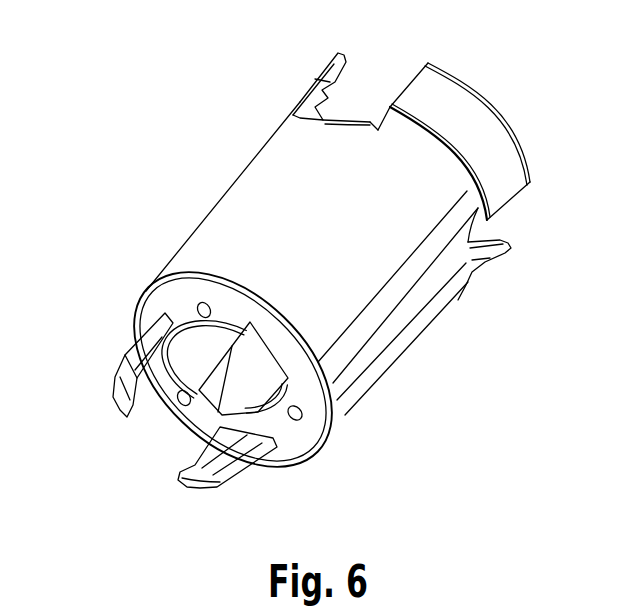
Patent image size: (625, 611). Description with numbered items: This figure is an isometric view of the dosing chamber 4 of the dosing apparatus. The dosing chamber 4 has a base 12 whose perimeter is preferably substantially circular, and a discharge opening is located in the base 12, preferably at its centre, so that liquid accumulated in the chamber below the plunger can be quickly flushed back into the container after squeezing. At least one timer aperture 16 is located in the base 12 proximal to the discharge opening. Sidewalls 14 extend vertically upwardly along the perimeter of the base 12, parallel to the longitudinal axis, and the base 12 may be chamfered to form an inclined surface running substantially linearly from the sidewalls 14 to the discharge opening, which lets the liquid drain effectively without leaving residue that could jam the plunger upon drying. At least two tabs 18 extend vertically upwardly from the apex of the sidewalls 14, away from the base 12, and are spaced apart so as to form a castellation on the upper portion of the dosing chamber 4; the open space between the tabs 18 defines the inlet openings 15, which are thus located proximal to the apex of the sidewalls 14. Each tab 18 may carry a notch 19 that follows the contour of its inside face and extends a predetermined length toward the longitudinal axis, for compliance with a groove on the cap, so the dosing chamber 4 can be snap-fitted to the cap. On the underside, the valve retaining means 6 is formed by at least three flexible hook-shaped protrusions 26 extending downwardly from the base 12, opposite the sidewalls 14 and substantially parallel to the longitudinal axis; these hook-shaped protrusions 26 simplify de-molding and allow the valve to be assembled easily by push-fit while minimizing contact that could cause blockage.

The dosing chamber 4 is at (192, 228).
The valve retaining means 6 is at (222, 412).
The base 12 is at (162, 301).
The sidewalls 14 is at (400, 337).
The inlet opening 15 is at (377, 88).
The timer aperture 16 is at (292, 417).
The tabs 18 is at (468, 123).
The notch 19 is at (318, 74).
The hook-shaped protrusions 26 is at (250, 471).